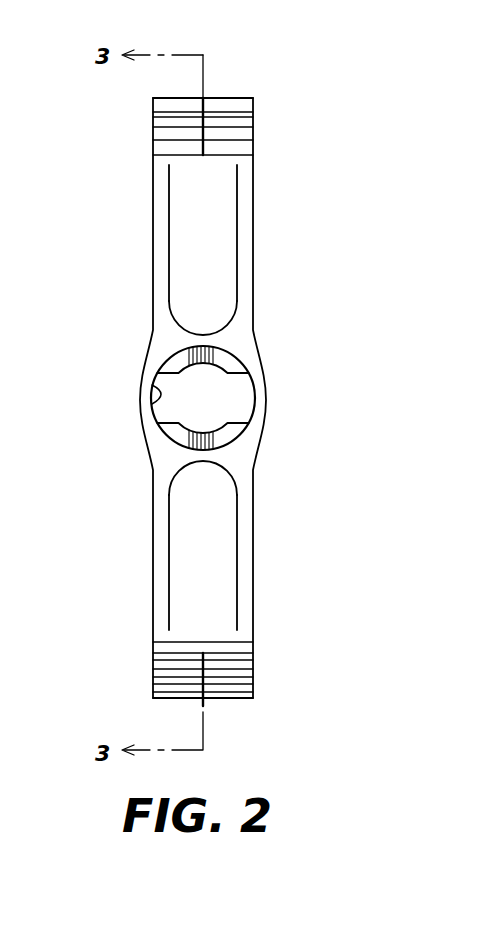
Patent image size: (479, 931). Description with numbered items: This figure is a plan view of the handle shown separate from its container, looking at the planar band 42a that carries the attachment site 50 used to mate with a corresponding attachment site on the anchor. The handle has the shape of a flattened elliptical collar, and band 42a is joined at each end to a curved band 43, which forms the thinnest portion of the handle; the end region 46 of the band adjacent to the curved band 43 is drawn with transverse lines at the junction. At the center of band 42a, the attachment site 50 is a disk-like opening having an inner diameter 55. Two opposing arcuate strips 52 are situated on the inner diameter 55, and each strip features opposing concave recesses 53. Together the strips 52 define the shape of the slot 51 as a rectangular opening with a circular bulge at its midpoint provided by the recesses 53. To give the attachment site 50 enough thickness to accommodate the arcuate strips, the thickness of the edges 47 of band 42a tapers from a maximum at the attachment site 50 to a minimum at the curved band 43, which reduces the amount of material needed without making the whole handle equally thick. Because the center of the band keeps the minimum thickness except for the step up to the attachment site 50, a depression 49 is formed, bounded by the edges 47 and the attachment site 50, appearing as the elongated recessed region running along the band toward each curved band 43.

The band 42a is at (151, 246).
The curved band 43 is at (248, 97).
The grooves 46 is at (164, 127).
The edges 47 is at (169, 233).
The depression 49 is at (206, 277).
The attachment site 50 is at (140, 419).
The slot 51 is at (233, 395).
The arcuate strips 52 is at (174, 368).
The concave recesses 53 is at (212, 369).
The inner diameter 55 is at (156, 402).